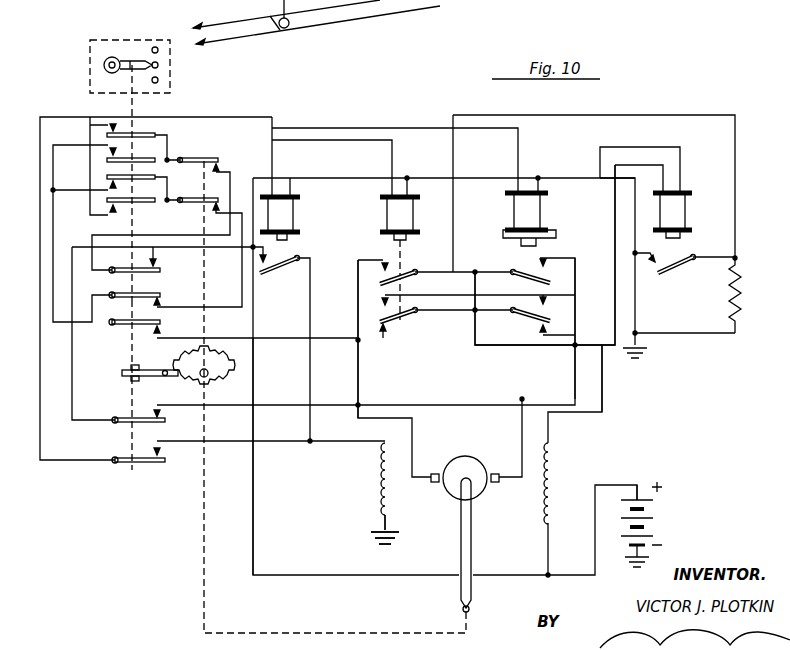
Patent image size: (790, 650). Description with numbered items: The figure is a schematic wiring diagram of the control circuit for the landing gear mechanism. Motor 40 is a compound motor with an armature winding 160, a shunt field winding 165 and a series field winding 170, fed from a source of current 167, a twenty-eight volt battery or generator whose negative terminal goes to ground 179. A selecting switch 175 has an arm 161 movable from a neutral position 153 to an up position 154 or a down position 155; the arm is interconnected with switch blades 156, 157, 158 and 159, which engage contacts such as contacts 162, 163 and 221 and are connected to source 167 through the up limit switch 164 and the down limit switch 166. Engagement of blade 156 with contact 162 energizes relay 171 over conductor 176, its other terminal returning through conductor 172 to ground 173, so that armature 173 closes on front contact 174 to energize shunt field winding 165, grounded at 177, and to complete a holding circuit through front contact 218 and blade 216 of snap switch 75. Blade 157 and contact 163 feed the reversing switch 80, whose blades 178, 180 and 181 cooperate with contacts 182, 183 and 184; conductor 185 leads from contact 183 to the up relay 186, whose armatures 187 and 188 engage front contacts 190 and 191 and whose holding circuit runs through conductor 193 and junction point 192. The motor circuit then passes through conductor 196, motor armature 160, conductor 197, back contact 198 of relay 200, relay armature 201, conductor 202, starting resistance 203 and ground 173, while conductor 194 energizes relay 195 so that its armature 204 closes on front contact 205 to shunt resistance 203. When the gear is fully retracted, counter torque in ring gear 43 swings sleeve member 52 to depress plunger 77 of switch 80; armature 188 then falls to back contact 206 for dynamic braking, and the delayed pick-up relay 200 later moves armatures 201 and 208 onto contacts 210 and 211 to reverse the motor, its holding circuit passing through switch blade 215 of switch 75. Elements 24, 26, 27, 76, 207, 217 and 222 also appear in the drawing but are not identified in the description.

The pivot pin 24 is at (289, 25).
The lever arm 26 is at (418, 2).
The link 27 is at (274, 26).
The motor 40 is at (475, 514).
The ring gear 43 is at (231, 376).
The sleeve member 52 is at (150, 360).
The snap switch 75 is at (133, 437).
The collar 76 is at (130, 381).
The plunger 77 is at (130, 366).
The switch 80 is at (134, 290).
The neutral position 153 is at (160, 65).
The up position 154 is at (157, 46).
The down position 155 is at (160, 80).
The switch blade 156 is at (143, 136).
The switch blade 157 is at (138, 158).
The switch blade 158 is at (155, 176).
The switch blade 159 is at (137, 200).
The armature winding 160 is at (490, 498).
The arm 161 is at (127, 55).
The contact 162 is at (90, 125).
The contact 163 is at (90, 149).
The up limit switch 164 is at (192, 158).
The shunt field winding 165 is at (380, 500).
The down limit switch 166 is at (192, 206).
The source of current 167 is at (665, 520).
The series field winding 170 is at (557, 452).
The relay 171 is at (296, 212).
The conductor 172 is at (356, 175).
The ground 173 is at (280, 280).
The front contact 174 is at (270, 258).
The selecting switch 175 is at (80, 90).
The conductor 176 is at (257, 510).
The ground 177 is at (398, 537).
The switch blade 178 is at (122, 268).
The ground connection 179 is at (636, 570).
The switch blade 180 is at (110, 293).
The switch blade 181 is at (120, 320).
The contact 182 is at (158, 264).
The contact 183 is at (160, 303).
The contact 184 is at (160, 333).
The conductor 185 is at (398, 161).
The up relay 186 is at (414, 212).
The relay armature 187 is at (380, 283).
The relay armature 188 is at (380, 321).
The front contact 190 is at (404, 264).
The front contact 191 is at (380, 297).
The junction point 192 is at (608, 345).
The conductor 193 is at (505, 348).
The conductor 194 is at (636, 302).
The relay 195 is at (694, 210).
The conductor 196 is at (358, 380).
The conductor 197 is at (575, 386).
The back contact 198 is at (558, 323).
The relay 200 is at (546, 210).
The relay armature 201 is at (530, 318).
The conductor 202 is at (454, 246).
The starting resistance 203 is at (745, 272).
The relay armature 204 is at (675, 272).
The front contact 205 is at (675, 252).
The back contact 206 is at (392, 330).
The conductor 207 is at (520, 146).
The relay armature 208 is at (560, 280).
The contact 210 is at (558, 299).
The front contact 211 is at (546, 262).
The switch blade 215 is at (113, 425).
The switch blade 216 is at (128, 465).
The contact 217 is at (160, 415).
The front contact 218 is at (160, 455).
The contact 221 is at (90, 190).
The contact arm 222 is at (90, 215).